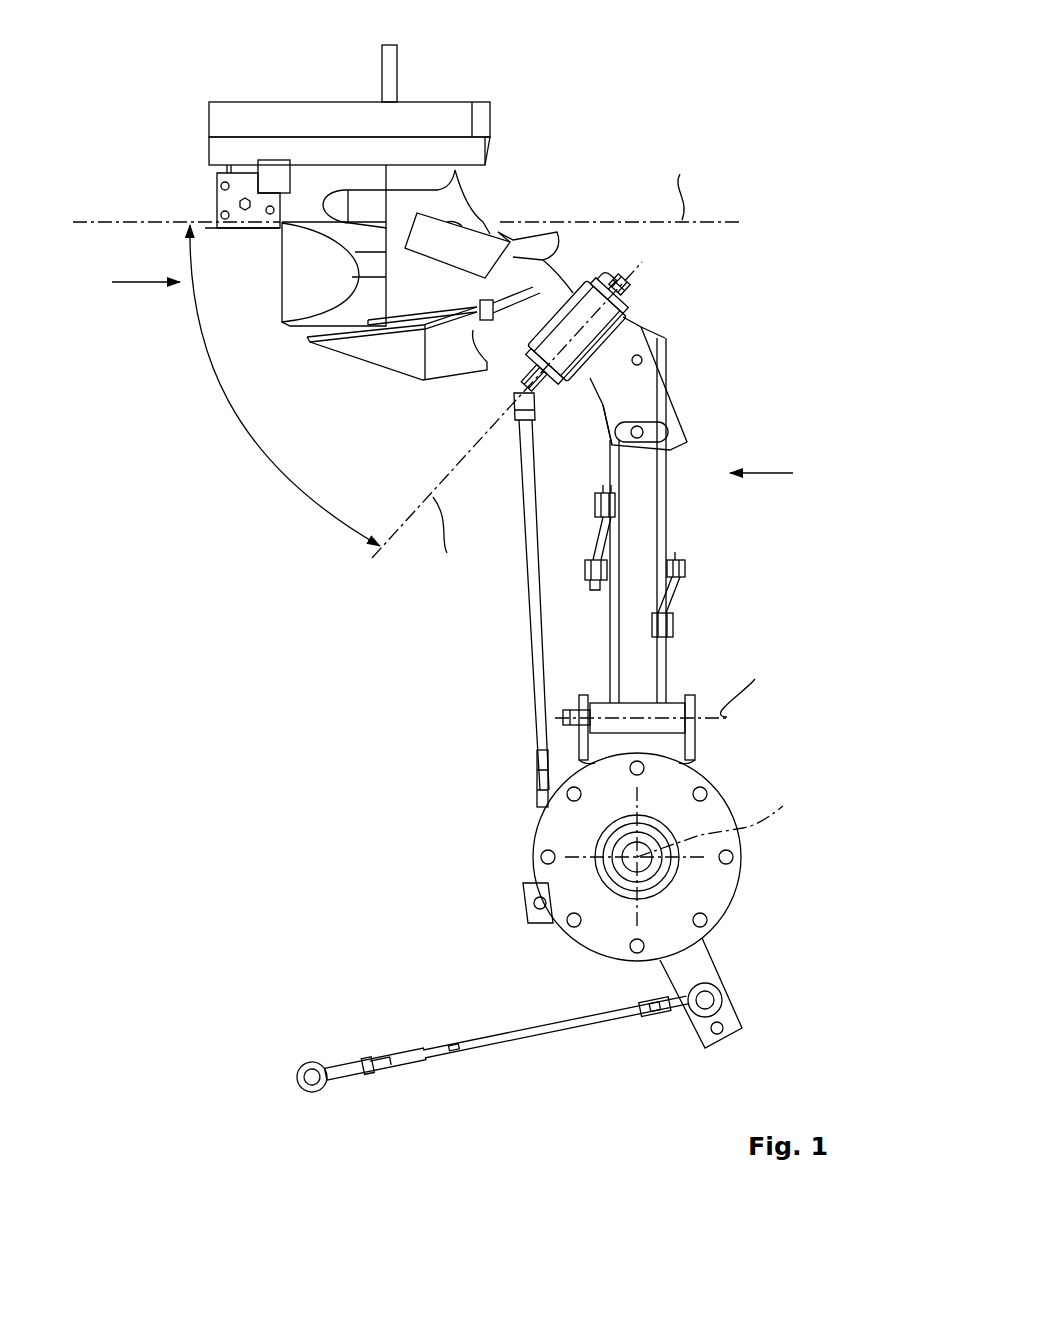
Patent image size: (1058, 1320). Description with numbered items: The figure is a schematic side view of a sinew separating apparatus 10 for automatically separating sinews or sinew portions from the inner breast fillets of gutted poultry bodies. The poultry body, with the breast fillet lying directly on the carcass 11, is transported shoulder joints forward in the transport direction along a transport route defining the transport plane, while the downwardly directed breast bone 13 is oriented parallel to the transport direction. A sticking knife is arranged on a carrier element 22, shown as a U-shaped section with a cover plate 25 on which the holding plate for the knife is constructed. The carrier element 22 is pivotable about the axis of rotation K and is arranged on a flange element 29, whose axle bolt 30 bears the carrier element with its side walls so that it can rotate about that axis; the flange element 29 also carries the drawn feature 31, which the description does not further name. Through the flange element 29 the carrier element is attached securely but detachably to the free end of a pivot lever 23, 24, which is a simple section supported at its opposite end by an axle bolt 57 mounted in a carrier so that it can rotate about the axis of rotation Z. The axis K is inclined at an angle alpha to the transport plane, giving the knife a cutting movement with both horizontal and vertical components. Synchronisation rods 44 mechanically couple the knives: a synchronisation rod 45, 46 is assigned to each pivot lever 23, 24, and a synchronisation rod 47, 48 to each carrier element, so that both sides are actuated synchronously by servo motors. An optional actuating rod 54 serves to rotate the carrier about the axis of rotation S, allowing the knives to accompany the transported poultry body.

The sinew separating apparatus 10 is at (332, 765).
The carcass 11 is at (370, 380).
The breast bone 13 is at (450, 358).
The carrier element 22 is at (572, 282).
The pivot lever 23 is at (638, 555).
The pivot lever 24 is at (693, 520).
The cover plate 25 is at (577, 283).
The flange element 29 is at (645, 382).
The axle bolt 30 is at (627, 290).
The slot 31 is at (660, 433).
The synchronisation rods 44 is at (497, 677).
The synchronisation rod 45 is at (668, 593).
The synchronisation rod 46 is at (600, 537).
The synchronisation rod 47 is at (532, 753).
The synchronisation rod 48 is at (490, 836).
The actuating rod 54 is at (558, 1025).
The axle bolt 57 is at (565, 718).